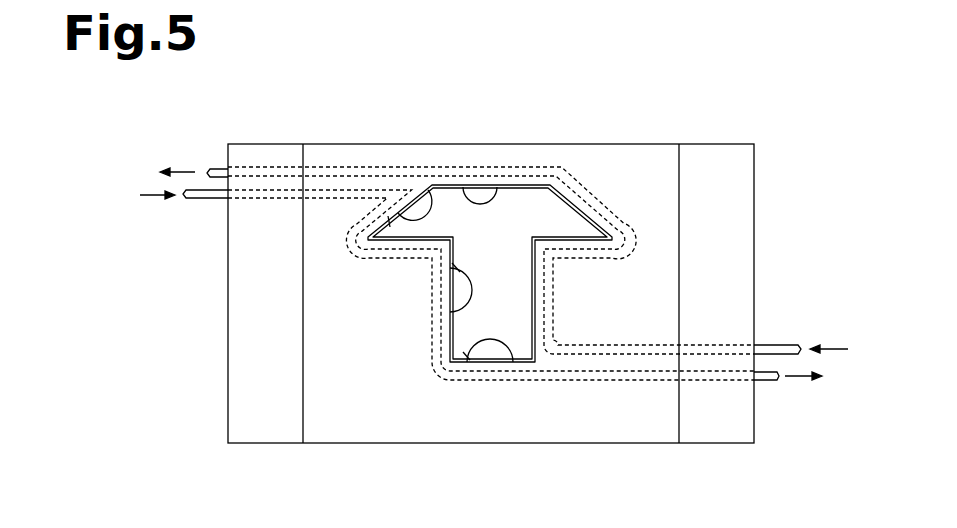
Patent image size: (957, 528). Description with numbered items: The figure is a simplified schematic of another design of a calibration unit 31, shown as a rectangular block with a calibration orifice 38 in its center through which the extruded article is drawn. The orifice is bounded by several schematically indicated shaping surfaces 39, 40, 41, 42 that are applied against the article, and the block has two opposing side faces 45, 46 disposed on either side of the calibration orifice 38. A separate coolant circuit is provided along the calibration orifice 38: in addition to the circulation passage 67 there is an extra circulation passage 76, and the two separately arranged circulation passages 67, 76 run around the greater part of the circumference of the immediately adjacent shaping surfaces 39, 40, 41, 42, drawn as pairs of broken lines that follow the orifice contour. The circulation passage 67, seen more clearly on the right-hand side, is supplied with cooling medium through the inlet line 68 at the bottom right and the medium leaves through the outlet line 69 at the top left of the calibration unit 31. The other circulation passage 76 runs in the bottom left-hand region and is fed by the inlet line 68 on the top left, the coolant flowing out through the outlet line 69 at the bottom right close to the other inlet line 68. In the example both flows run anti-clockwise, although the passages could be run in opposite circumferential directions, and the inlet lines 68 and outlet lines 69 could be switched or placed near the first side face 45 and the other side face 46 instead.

The calibration unit 31 is at (268, 157).
The calibration orifice 38 is at (566, 212).
The shaping surface 39 is at (512, 360).
The shaping surface 40 is at (458, 307).
The shaping surface 41 is at (417, 203).
The shaping surface 42 is at (462, 190).
The side face 45 is at (232, 340).
The side face 46 is at (762, 247).
The circulation passage 67 is at (505, 180).
The inlet line 68 is at (205, 196).
The outlet line 69 is at (222, 170).
The circulation passage 76 is at (440, 378).